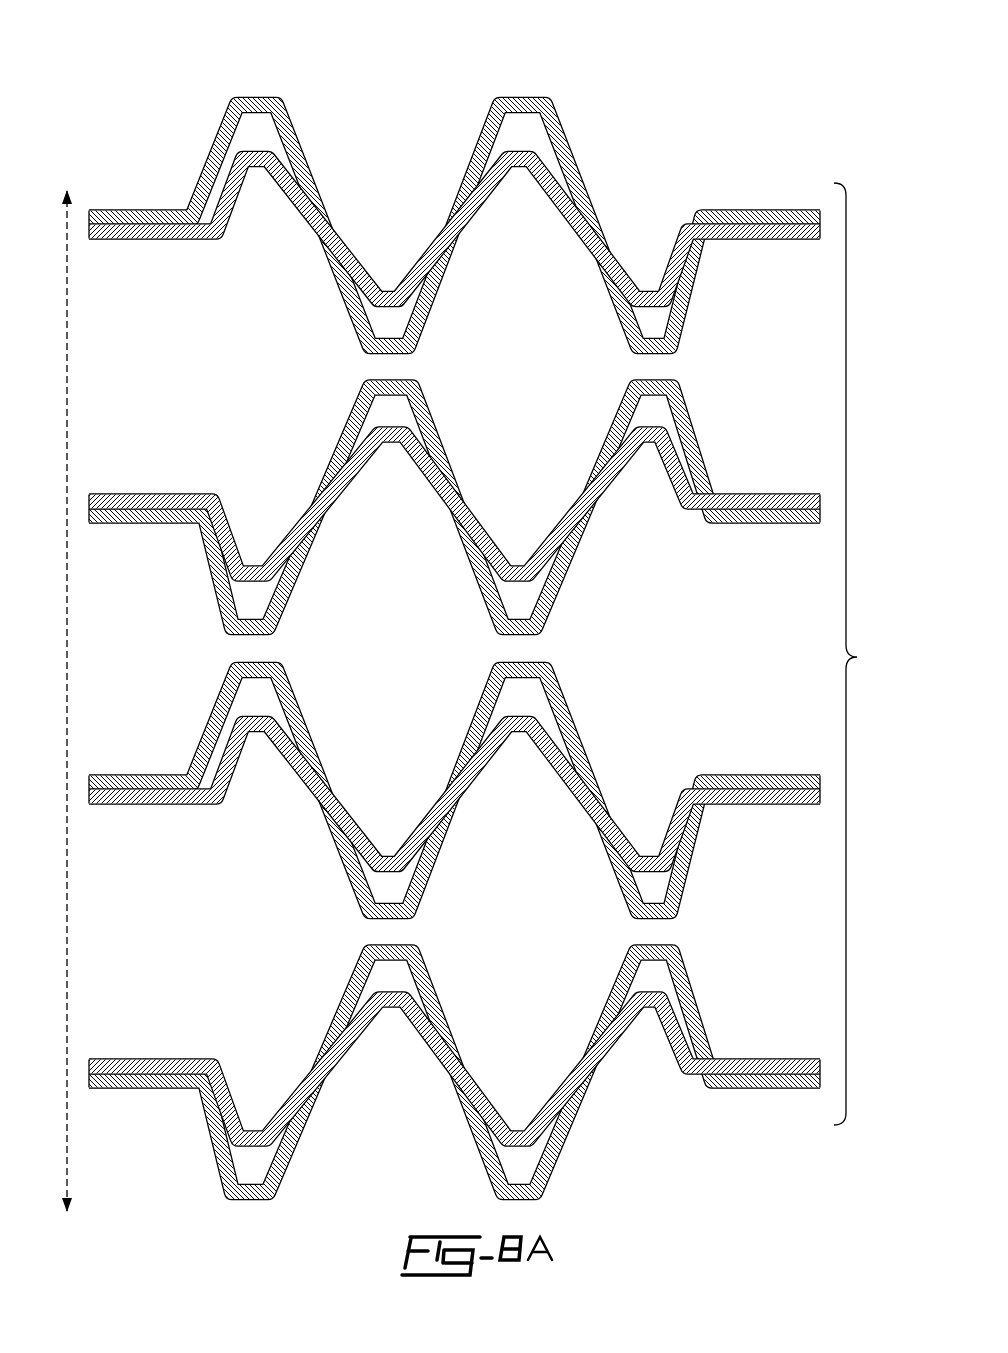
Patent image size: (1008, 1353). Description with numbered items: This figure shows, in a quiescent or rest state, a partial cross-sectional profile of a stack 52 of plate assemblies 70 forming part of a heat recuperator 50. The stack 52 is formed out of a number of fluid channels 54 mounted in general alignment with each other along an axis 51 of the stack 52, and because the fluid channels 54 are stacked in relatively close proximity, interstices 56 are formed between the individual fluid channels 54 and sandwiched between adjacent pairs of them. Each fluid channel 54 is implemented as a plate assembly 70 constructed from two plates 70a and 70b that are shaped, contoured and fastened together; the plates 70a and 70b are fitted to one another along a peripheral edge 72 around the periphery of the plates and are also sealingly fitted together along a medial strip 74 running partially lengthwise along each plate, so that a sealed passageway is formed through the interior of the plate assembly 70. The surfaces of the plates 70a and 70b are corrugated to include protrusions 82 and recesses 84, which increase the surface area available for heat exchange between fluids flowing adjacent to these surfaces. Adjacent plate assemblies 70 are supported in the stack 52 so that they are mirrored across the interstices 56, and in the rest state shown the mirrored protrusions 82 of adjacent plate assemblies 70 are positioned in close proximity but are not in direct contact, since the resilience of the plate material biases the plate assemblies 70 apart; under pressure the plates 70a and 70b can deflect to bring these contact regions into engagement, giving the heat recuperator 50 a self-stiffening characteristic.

The heat recuperator 50 is at (97, 124).
The axis 51 is at (67, 900).
The stack 52 is at (494, 648).
The fluid channel 54 is at (316, 210).
The interstice 56 is at (530, 363).
The plate assembly 70 is at (730, 249).
The plate 70a is at (468, 180).
The plate 70b is at (477, 223).
The peripheral edge 72 is at (762, 210).
The medial strip 74 is at (135, 210).
The protrusion 82 is at (353, 343).
The recess 84 is at (389, 288).